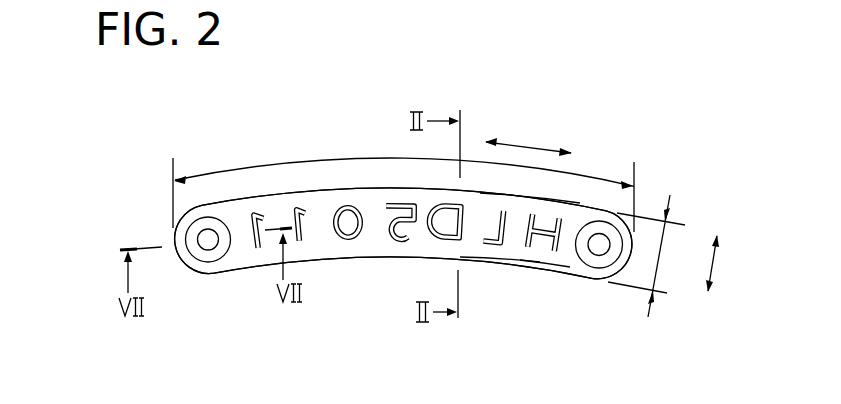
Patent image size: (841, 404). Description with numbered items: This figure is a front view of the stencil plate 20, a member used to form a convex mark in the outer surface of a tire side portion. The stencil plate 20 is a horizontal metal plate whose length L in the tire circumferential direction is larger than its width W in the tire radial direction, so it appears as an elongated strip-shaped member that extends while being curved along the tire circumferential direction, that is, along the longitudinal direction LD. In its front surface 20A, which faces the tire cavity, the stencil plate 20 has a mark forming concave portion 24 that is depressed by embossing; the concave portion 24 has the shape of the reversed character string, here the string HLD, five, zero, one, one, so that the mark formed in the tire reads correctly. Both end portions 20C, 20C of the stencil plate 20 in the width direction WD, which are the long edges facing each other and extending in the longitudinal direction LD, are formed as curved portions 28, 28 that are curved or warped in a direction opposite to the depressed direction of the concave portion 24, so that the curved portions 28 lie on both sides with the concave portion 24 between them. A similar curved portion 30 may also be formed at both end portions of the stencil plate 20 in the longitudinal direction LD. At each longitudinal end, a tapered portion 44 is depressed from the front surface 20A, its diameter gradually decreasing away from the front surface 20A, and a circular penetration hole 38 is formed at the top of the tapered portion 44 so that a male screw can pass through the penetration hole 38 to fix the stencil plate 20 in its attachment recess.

The stencil plate 20 is at (421, 81).
The front surface 20A is at (545, 263).
The end portion in the width direction 20C is at (314, 203).
The mark forming concave portion 24 is at (393, 242).
The curved portion 28 is at (556, 198).
The curved portion 30 is at (188, 257).
The penetration hole 38 is at (213, 245).
The tapered portion 44 is at (197, 227).
The length L is at (353, 160).
The longitudinal direction LD is at (528, 136).
The width W is at (647, 256).
The width direction WD is at (734, 263).